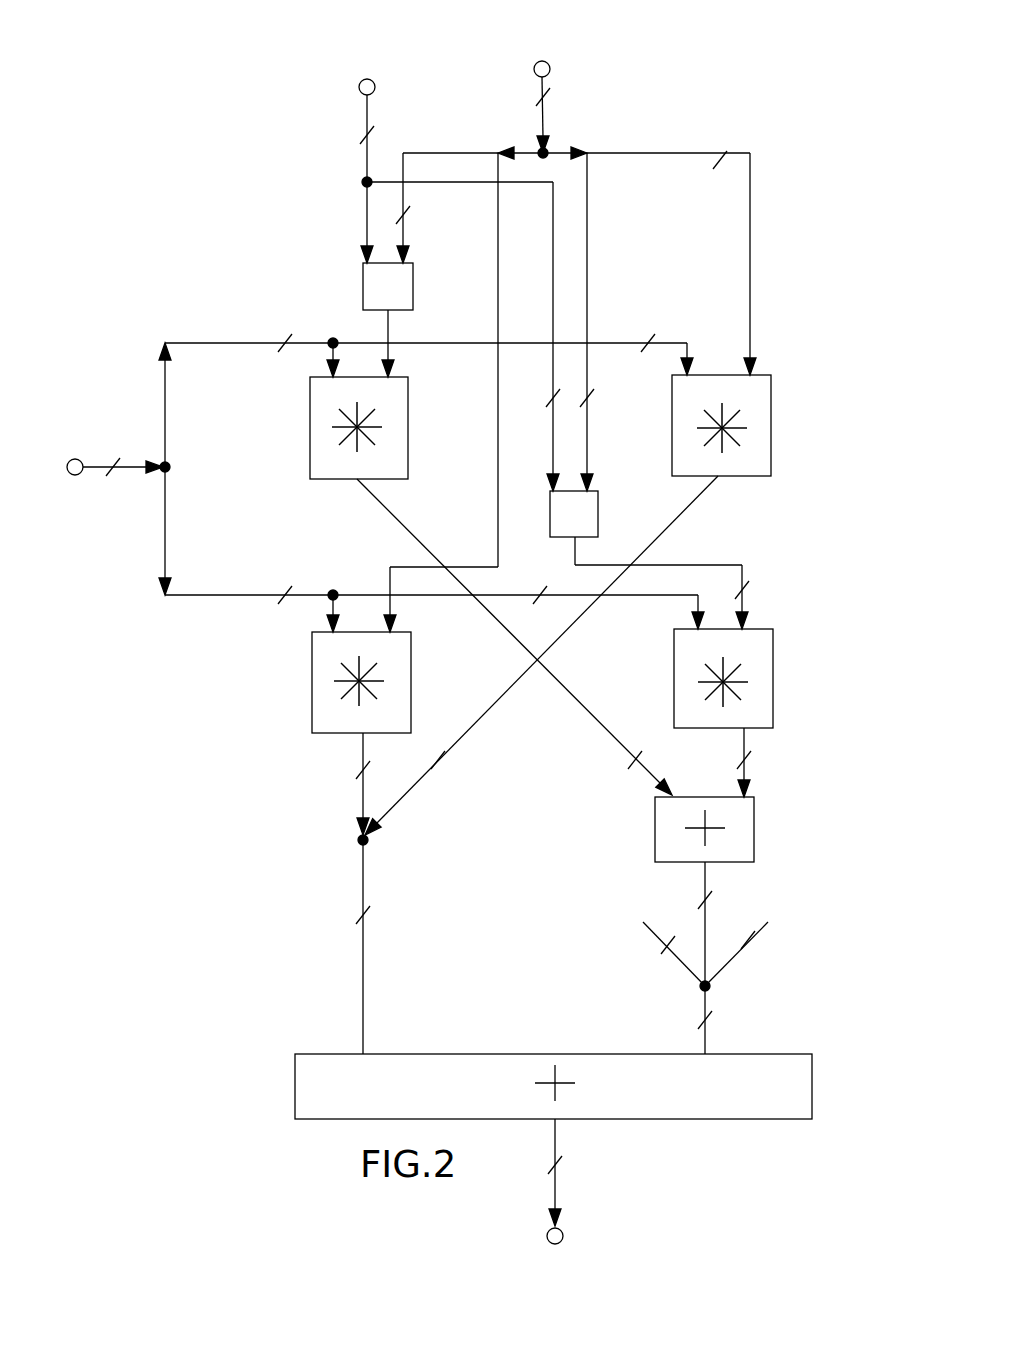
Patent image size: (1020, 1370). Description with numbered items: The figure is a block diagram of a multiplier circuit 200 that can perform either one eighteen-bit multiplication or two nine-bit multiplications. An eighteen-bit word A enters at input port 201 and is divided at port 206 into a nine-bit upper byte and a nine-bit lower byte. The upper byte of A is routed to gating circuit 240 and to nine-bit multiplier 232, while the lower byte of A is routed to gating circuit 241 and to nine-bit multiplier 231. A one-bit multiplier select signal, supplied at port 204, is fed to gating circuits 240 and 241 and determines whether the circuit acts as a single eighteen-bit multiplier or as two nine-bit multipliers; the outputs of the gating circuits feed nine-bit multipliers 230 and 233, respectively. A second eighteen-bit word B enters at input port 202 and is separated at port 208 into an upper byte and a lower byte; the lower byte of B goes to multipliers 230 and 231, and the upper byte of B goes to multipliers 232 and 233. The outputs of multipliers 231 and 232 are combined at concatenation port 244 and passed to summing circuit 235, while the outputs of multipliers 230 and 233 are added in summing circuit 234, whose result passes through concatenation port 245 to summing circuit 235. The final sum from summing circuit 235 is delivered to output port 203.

The multiplier circuit 200 is at (755, 91).
The input port 201 is at (534, 66).
The input port 202 is at (73, 458).
The output port 203 is at (565, 1233).
The port 204 is at (358, 87).
The port 206 is at (548, 125).
The port 208 is at (170, 468).
The 9-bit multiplier 230 is at (309, 415).
The 9-bit multiplier 231 is at (772, 416).
The 9-bit multiplier 232 is at (311, 685).
The 9-bit multiplier 233 is at (773, 665).
The summing circuit 234 is at (755, 820).
The summing circuit 235 is at (813, 1084).
The gating circuit 240 is at (362, 282).
The gating circuit 241 is at (599, 500).
The concatenation port 244 is at (357, 840).
The concatenation port 245 is at (710, 988).